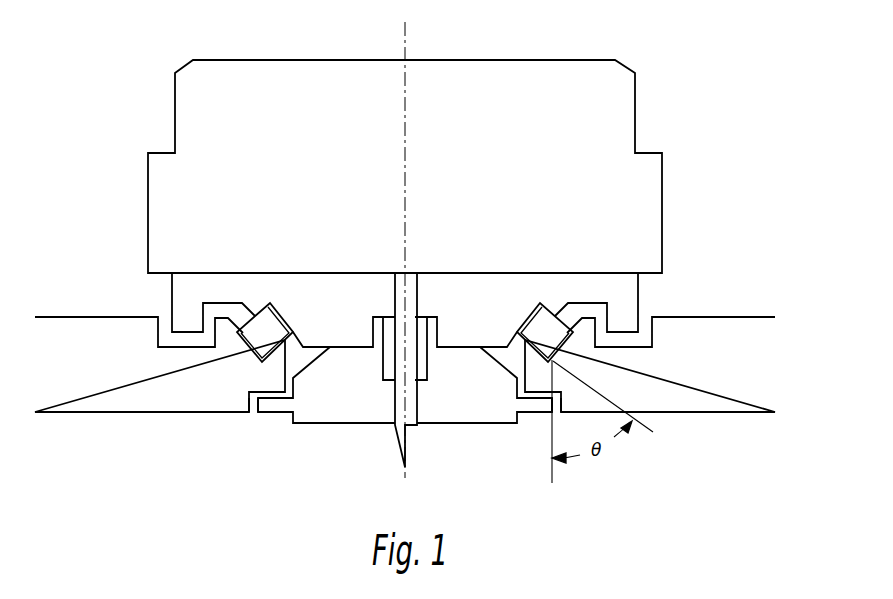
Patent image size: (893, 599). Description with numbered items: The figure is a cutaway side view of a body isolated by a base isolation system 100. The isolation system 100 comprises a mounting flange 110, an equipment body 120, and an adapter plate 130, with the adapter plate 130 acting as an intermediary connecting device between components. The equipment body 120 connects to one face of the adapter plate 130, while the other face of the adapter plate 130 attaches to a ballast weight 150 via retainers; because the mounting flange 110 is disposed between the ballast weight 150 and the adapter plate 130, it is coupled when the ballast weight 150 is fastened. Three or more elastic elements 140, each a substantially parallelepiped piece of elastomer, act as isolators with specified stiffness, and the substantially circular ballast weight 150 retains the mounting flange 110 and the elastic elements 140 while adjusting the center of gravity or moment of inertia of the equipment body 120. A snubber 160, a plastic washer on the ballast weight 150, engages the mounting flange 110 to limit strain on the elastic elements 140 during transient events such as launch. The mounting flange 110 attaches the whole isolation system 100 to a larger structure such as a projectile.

The isolation system 100 is at (710, 57).
The mounting flange 110 is at (776, 363).
The equipment body 120 is at (636, 113).
The adapter plate 130 is at (638, 303).
The elastic elements 140 is at (275, 320).
The ballast weight 150 is at (430, 426).
The snubber 160 is at (270, 424).